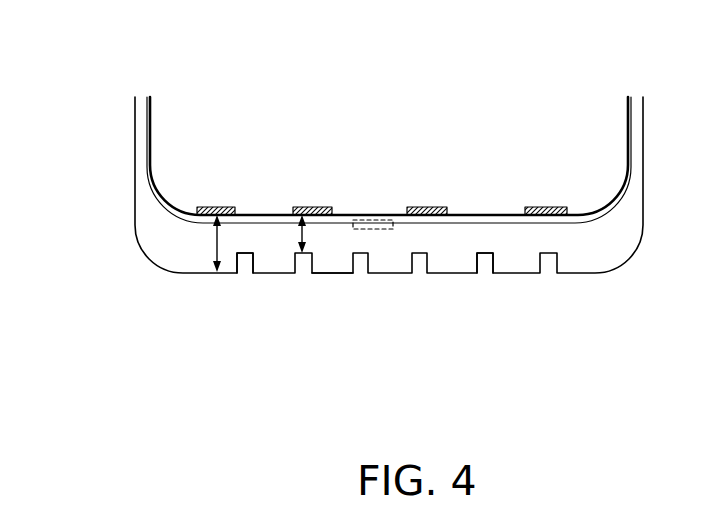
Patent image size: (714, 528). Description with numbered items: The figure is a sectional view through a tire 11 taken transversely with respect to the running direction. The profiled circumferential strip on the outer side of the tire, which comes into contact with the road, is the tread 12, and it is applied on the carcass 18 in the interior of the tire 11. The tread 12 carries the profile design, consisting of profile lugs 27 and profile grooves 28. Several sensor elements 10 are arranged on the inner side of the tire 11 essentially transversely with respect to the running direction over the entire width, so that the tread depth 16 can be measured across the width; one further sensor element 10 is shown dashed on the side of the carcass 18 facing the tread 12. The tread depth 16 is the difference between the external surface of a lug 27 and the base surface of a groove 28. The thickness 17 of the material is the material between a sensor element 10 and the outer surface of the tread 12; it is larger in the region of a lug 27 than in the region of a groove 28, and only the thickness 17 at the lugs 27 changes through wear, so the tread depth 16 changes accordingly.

The sensor element 10 is at (424, 207).
The tire 11 is at (530, 61).
The tread 12 is at (598, 283).
The tread depth 16 is at (491, 257).
The thickness of the material 17 is at (298, 226).
The carcass 18 is at (474, 214).
The profile lug 27 is at (331, 276).
The profile groove 28 is at (247, 276).